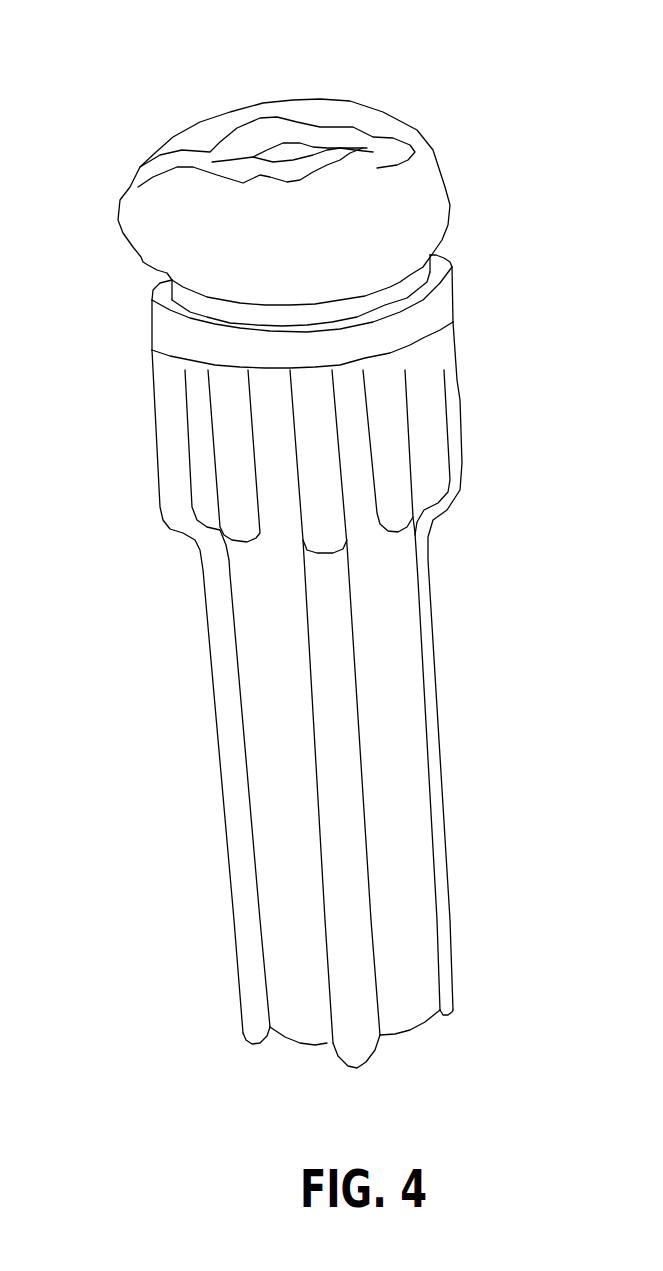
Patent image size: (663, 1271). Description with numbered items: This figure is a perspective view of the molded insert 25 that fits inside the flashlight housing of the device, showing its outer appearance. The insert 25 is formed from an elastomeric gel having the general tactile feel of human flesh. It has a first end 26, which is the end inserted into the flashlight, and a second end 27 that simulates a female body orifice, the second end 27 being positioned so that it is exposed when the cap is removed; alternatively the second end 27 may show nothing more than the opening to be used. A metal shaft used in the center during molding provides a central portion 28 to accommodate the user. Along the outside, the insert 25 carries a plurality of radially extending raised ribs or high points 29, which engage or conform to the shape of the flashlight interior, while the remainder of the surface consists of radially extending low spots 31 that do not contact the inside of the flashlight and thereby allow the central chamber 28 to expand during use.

The insert 25 is at (251, 311).
The first end 26 is at (364, 1043).
The second end 27 is at (332, 202).
The central portion 28 is at (325, 105).
The raised ribs 29 is at (298, 682).
The low spots 31 is at (333, 453).